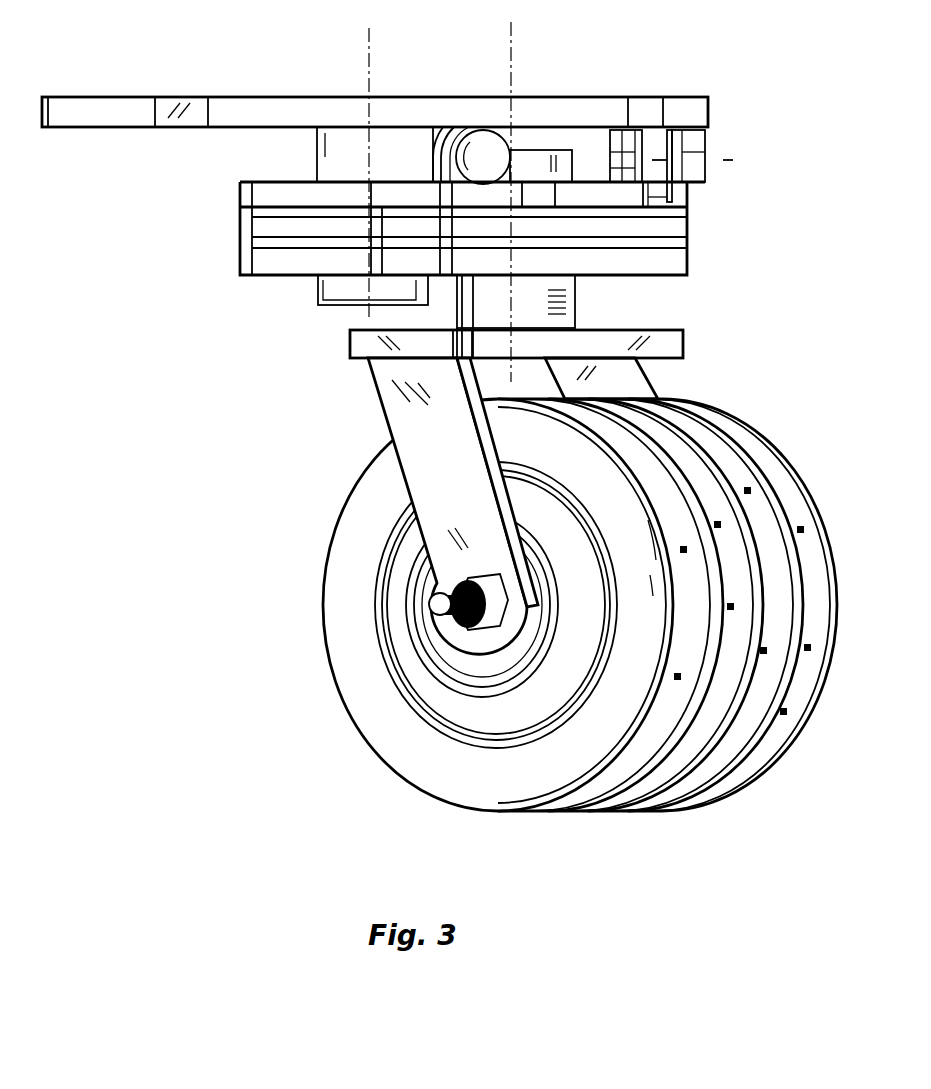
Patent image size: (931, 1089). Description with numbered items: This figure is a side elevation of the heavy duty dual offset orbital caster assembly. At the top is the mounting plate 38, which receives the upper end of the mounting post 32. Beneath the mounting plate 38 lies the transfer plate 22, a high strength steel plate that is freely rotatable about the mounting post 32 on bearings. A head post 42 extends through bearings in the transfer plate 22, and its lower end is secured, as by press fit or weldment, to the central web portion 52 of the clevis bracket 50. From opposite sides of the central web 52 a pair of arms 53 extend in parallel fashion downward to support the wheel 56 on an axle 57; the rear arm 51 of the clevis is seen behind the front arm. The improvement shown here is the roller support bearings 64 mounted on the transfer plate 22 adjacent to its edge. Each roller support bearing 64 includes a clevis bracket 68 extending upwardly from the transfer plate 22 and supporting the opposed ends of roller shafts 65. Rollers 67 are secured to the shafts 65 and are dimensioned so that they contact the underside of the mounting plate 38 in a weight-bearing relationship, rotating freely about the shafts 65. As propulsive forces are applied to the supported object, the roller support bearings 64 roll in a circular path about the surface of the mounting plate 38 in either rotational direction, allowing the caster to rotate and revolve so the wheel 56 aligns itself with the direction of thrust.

The transfer plate 22 is at (240, 192).
The mounting post 32 is at (335, 290).
The mounting plate 38 is at (128, 117).
The head post 42 is at (575, 297).
The clevis bracket 50 is at (516, 625).
The rear fork leg 51 is at (655, 360).
The central web portion 52 is at (690, 337).
The arms 53 is at (433, 490).
The wheel 56 is at (343, 627).
The axle 57 is at (436, 614).
The roller support bearings 64 is at (553, 148).
The roller shafts 65 is at (482, 150).
The rollers 67 is at (430, 147).
The clevis bracket 68 is at (687, 190).